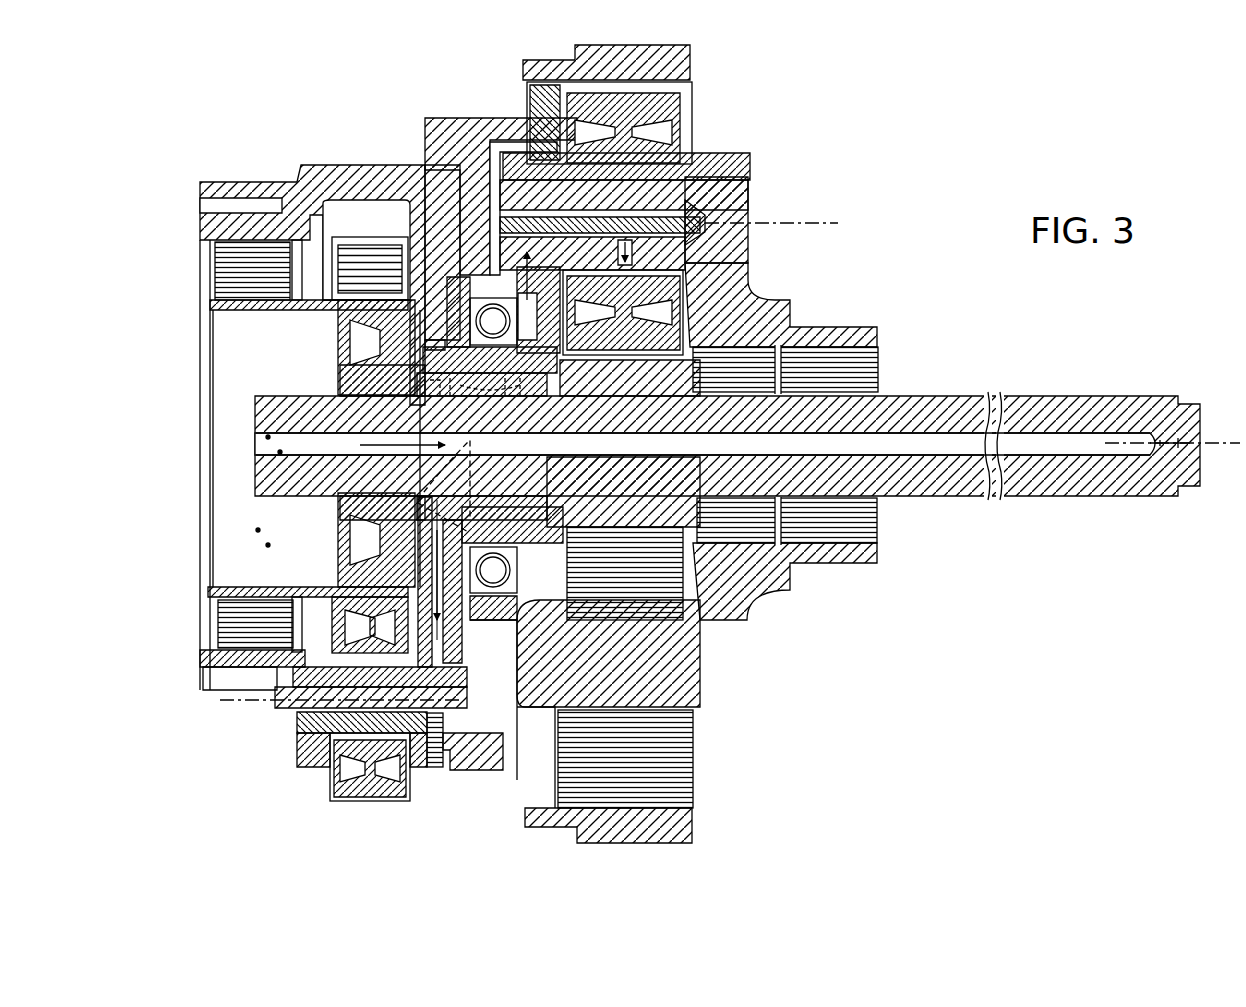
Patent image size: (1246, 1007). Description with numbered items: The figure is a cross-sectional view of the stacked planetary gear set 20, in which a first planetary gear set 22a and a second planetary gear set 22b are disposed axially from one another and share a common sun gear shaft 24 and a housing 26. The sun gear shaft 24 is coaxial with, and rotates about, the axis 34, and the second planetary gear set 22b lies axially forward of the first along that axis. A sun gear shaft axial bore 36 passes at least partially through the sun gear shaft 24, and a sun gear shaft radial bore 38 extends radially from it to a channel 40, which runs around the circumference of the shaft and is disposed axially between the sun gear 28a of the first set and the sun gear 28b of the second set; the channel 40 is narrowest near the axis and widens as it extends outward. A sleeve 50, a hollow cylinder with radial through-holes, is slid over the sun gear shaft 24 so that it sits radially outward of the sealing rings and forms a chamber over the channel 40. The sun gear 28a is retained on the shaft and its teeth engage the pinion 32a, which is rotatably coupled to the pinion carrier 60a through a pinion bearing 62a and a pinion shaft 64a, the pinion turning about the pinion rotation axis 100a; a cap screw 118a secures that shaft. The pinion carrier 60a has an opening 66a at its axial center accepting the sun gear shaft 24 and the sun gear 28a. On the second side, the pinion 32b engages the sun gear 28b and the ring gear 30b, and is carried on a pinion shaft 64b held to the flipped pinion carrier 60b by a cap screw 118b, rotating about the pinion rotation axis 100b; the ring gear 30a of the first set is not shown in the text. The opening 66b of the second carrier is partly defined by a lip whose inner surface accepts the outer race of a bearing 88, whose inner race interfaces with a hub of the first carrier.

The stacked planetary gear set 20 is at (946, 145).
The first planetary gear set 22a is at (312, 138).
The second planetary gear set 22b is at (770, 675).
The sun gear shaft 24 is at (1075, 393).
The housing 26 is at (686, 70).
The sun gear 28a is at (375, 342).
The sun gear 28b is at (655, 500).
The first stator 30a is at (254, 445).
The ring gear 30b is at (670, 765).
The pinion 32a is at (375, 786).
The pinion 32b is at (672, 136).
The axis 34 is at (1205, 442).
The sun gear shaft axial bore 36 is at (1040, 448).
The sun gear shaft radial bore 38 is at (418, 500).
The channel 40 is at (440, 520).
The sleeve 50 is at (467, 358).
The pinion carrier 60a is at (465, 770).
The pinion carrier 60b is at (860, 333).
The pinion bearing 62a is at (432, 745).
The pinion shaft 64a is at (315, 755).
The pinion shaft 64b is at (745, 258).
The opening 66a is at (410, 365).
The opening 66b is at (860, 537).
The bearing 88 is at (493, 318).
The pinion rotation axis 100a is at (225, 700).
The pinion rotation axis 100b is at (799, 224).
The cap screw 118a is at (300, 728).
The cap screw 118b is at (700, 212).